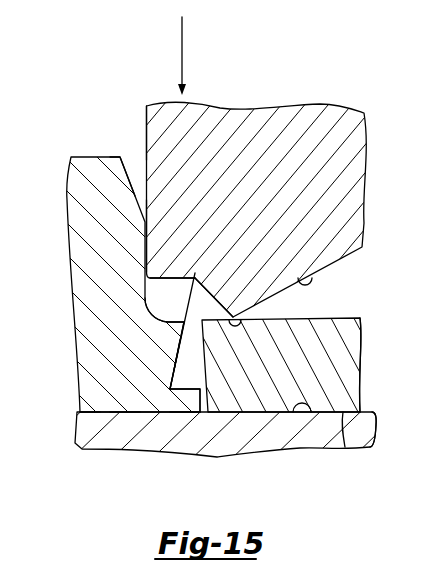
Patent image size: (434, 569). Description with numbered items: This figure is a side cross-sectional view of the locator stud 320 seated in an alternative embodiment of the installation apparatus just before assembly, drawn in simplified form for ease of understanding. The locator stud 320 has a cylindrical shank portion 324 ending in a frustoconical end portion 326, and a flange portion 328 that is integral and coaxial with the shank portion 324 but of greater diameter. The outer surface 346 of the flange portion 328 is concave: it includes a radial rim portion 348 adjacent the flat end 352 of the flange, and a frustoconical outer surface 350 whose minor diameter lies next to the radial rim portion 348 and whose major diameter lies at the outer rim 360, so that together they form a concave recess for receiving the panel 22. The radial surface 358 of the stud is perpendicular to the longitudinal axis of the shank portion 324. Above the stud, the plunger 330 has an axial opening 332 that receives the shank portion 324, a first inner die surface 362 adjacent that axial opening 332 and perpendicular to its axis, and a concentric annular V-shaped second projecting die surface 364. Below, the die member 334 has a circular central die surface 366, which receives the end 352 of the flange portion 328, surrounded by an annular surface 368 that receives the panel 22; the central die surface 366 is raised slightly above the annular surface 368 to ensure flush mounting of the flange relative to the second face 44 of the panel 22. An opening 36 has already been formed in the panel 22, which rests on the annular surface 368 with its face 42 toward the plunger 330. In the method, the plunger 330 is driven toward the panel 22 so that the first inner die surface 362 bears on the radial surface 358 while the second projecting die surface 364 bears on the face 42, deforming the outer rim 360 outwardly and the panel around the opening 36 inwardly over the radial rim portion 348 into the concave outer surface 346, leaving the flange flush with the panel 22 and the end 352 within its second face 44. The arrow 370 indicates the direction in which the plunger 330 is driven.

The locator stud 320 is at (48, 137).
The plunger 330 is at (317, 158).
The axial opening 332 is at (146, 127).
The cylindrical shank portion 324 is at (148, 242).
The first inner die surface 362 is at (150, 280).
The outer rim 360 is at (198, 274).
The annular surface 368 is at (312, 278).
The flange portion 328 is at (113, 358).
The frustoconical end portion 326 is at (128, 170).
The radial surface 358 is at (157, 311).
The outer surface 350 is at (180, 352).
The outer surface 346 is at (182, 370).
The opening 36 is at (170, 389).
The central die surface 366 is at (100, 411).
The radial rim portion 348 is at (182, 410).
The end 352 is at (123, 426).
The face 42 is at (334, 317).
The second projecting die surface 364 is at (240, 326).
The panel 22 is at (356, 367).
The die member 334 is at (236, 444).
The second face 44 is at (342, 448).
The applied force 370 is at (182, 47).